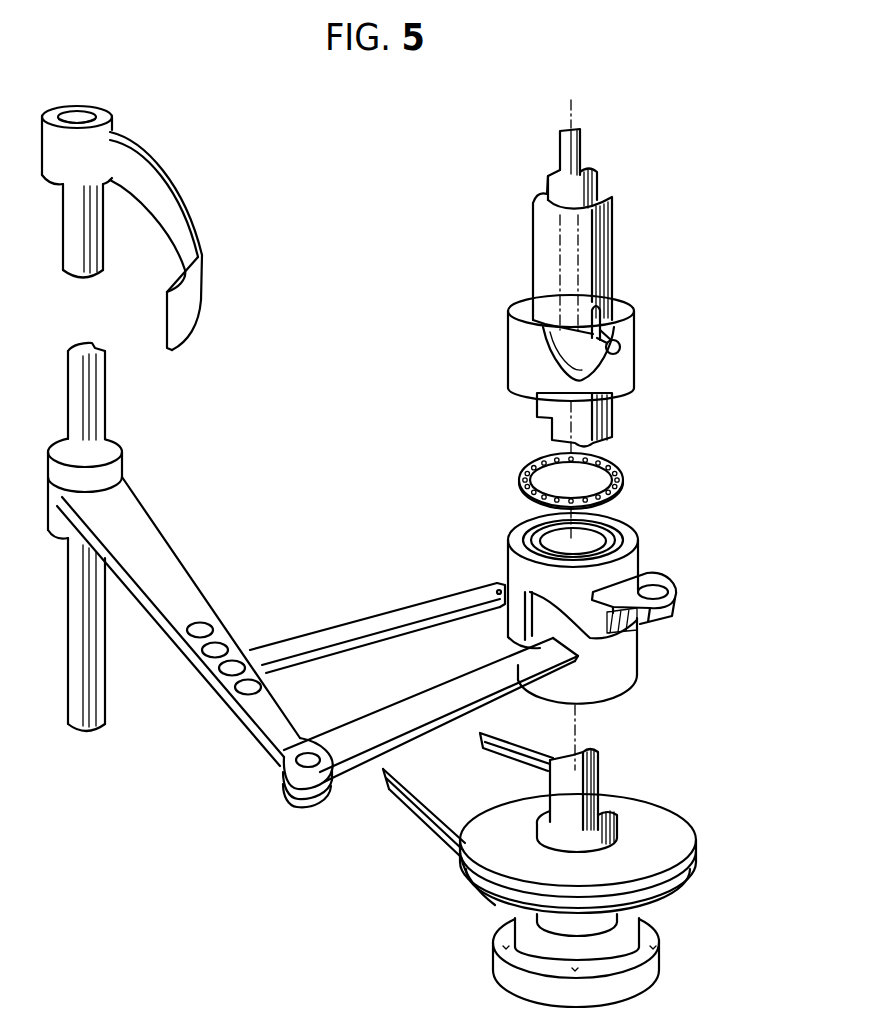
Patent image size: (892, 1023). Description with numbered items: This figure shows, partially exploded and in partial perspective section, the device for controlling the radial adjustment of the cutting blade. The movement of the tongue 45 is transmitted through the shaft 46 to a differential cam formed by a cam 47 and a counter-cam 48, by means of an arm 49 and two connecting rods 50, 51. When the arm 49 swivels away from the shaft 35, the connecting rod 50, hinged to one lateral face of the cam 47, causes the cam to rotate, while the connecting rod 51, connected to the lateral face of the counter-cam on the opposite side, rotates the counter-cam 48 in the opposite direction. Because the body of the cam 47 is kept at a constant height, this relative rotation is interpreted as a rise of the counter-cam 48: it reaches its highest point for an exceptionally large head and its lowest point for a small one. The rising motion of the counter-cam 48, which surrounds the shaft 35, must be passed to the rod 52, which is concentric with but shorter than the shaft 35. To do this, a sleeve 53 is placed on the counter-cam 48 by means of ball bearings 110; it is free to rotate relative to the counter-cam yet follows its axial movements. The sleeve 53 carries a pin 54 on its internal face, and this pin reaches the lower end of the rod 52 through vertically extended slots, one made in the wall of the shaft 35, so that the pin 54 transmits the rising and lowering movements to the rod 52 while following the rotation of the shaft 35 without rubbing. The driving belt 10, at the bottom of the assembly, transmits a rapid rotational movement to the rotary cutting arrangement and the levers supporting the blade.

The driving belt 10 is at (437, 842).
The shaft 35 is at (612, 260).
The tongue 45 is at (160, 185).
The shaft 46 is at (93, 385).
The cam 47 is at (607, 655).
The counter-cam 48 is at (618, 567).
The arm 49 is at (155, 548).
The connecting rod 50 is at (422, 700).
The connecting rod 51 is at (366, 636).
The rod 52 is at (580, 160).
The sleeve 53 is at (623, 375).
The pin 54 is at (620, 343).
The ball bearings 110 is at (620, 467).